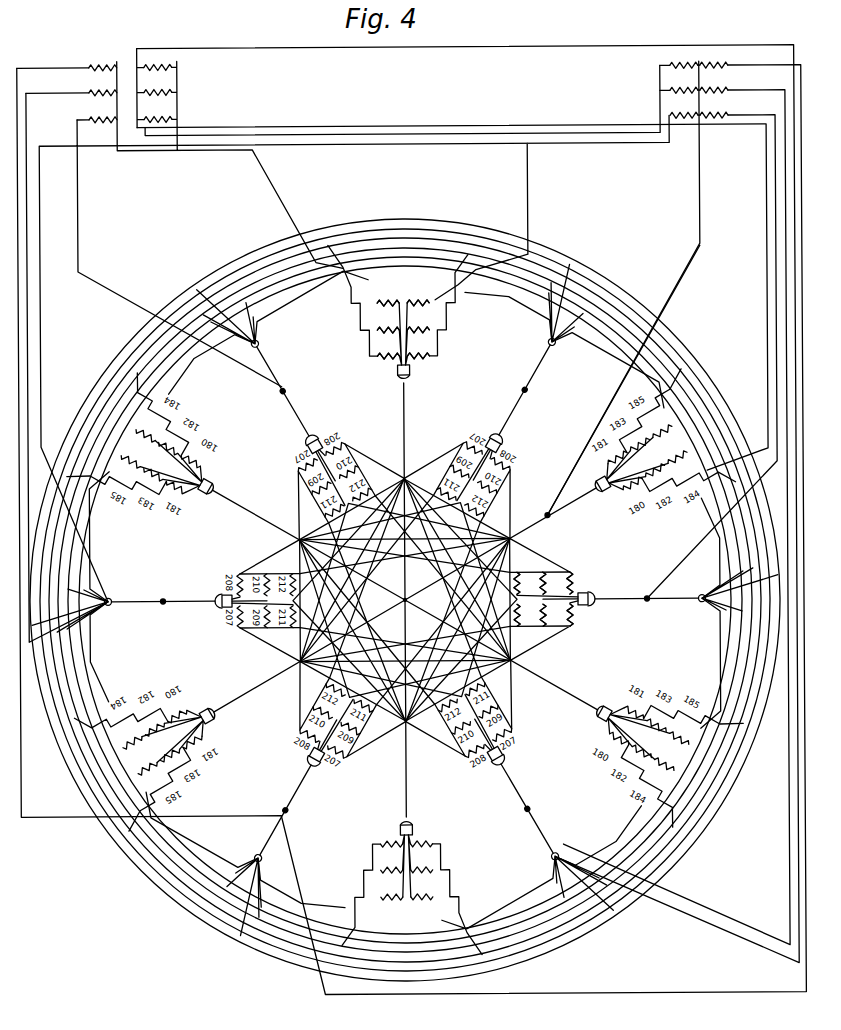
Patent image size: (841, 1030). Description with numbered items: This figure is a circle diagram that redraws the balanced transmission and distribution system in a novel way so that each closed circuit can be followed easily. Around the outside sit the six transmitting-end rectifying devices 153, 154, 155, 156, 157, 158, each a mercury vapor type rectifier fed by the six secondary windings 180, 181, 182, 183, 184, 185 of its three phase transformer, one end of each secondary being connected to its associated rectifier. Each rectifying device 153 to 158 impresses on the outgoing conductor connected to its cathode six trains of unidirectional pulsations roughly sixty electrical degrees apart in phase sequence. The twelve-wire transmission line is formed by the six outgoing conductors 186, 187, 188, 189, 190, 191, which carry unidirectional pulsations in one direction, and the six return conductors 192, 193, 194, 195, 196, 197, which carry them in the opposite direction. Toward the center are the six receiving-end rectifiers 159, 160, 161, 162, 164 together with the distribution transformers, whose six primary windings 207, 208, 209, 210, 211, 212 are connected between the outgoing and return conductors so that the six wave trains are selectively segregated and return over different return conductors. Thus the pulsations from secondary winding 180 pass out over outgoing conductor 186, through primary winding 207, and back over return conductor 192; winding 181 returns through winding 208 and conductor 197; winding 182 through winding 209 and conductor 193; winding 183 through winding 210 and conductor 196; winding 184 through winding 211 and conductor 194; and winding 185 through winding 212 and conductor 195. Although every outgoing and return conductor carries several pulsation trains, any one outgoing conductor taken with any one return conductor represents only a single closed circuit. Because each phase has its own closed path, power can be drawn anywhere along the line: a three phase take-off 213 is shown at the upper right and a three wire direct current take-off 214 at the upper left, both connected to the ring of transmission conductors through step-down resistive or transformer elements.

The rectifying device 153 is at (415, 374).
The rectifying device 154 is at (601, 499).
The rectifying device 155 is at (598, 702).
The rectifying device 156 is at (415, 823).
The rectifying device 157 is at (226, 715).
The rectifying device 158 is at (224, 480).
The rectifier 159 is at (513, 441).
The rectifier 160 is at (591, 594).
The rectifier 161 is at (512, 759).
The rectifier 162 is at (321, 770).
The rectifier 164 is at (318, 432).
The secondary winding 180 is at (419, 349).
The secondary winding 181 is at (388, 349).
The secondary winding 182 is at (419, 323).
The secondary winding 183 is at (388, 323).
The secondary winding 184 is at (419, 296).
The secondary winding 185 is at (388, 296).
The outgoing conductor 186 is at (407, 409).
The outgoing conductor 187 is at (550, 518).
The outgoing conductor 188 is at (563, 678).
The outgoing conductor 189 is at (406, 772).
The outgoing conductor 190 is at (250, 692).
The outgoing conductor 191 is at (252, 503).
The return conductor 192 is at (521, 418).
The return conductor 193 is at (624, 599).
The return conductor 194 is at (518, 779).
The return conductor 195 is at (285, 810).
The return conductor 196 is at (166, 598).
The return conductor 197 is at (294, 402).
The primary winding 207 is at (576, 583).
The primary winding 208 is at (576, 615).
The primary winding 209 is at (549, 583).
The primary winding 210 is at (549, 615).
The primary winding 211 is at (523, 583).
The primary winding 212 is at (523, 615).
The three phase take-off 213 is at (640, 80).
The three wire direct current take-off 214 is at (222, 93).